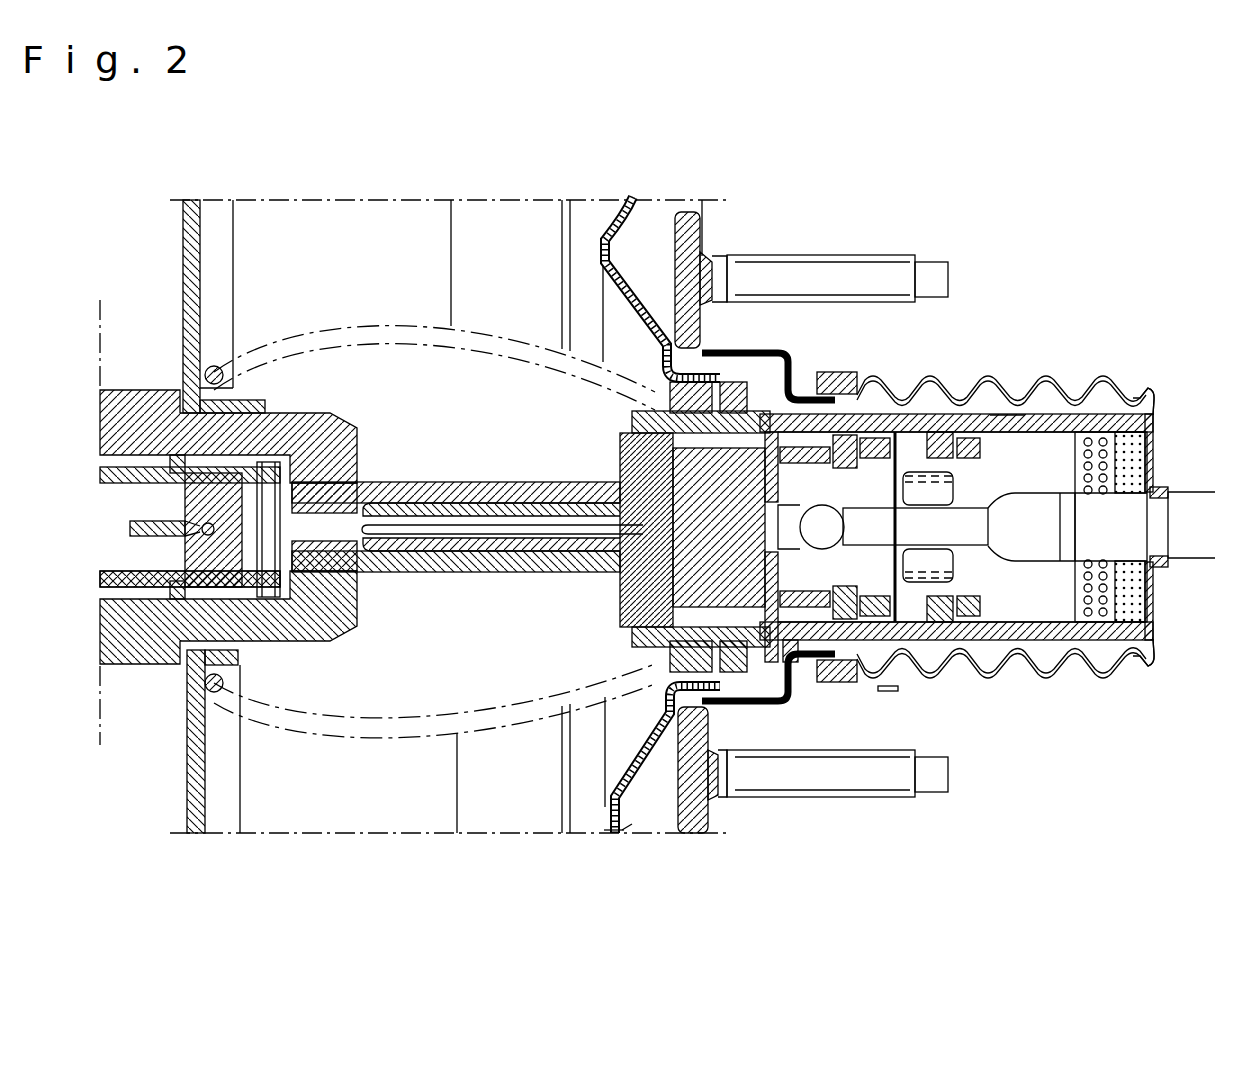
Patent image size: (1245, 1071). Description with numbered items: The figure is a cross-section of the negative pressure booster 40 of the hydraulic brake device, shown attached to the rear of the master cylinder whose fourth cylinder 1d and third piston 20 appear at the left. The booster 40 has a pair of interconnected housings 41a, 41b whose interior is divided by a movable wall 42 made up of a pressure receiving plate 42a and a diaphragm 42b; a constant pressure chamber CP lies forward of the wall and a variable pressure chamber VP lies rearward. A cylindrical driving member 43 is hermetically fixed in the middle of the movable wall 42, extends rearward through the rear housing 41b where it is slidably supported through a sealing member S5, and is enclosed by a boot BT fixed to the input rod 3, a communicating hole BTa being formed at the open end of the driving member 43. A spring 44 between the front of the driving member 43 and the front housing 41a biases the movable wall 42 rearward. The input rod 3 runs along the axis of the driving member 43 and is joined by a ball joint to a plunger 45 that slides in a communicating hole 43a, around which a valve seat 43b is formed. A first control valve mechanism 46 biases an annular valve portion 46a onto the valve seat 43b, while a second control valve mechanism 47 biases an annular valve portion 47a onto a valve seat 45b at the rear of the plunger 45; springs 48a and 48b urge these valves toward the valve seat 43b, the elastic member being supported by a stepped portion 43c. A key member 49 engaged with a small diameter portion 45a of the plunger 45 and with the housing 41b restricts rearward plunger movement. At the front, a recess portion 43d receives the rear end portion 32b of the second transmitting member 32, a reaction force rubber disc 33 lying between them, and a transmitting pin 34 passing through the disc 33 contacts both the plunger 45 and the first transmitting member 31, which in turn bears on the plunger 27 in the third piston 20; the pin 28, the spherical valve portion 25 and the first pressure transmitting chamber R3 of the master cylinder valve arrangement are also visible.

The constant pressure chamber CP is at (355, 225).
The variable pressure chamber VP is at (655, 235).
The front housing 41a is at (186, 226).
The rear housing 41b is at (703, 226).
The negative pressure booster 40 is at (998, 251).
The first pressure transmitting chamber R3 is at (144, 467).
The reaction force rubber disc 33 is at (640, 428).
The recess portion 43d is at (690, 413).
The communicating hole 43a is at (788, 415).
The valve seat 43b is at (843, 374).
The annular valve portion 46a is at (887, 390).
The stepped portion 43c is at (1043, 418).
The driving member 43 is at (1088, 418).
The valve seat 45b is at (1012, 493).
The boot BT is at (1143, 400).
The annular valve portion 47a is at (868, 432).
The pin 28 is at (283, 433).
The fourth cylinder 1d is at (358, 437).
The third piston 20 is at (416, 483).
The second transmitting member 32 is at (622, 478).
The first transmitting member 31 is at (469, 527).
The input rod 3 is at (1187, 520).
The plunger 27 is at (347, 532).
The transmitting pin 34 is at (618, 599).
The rear end portion 32b is at (612, 620).
The spherical-shaped valve portion 25 is at (152, 580).
The spring 44 is at (332, 737).
The key member 49 is at (690, 665).
The annular small diameter portion 45a is at (793, 662).
The plunger 45 is at (832, 575).
The first control valve mechanism 46 is at (885, 665).
The second control valve mechanism 47 is at (935, 600).
The spring 48a is at (1092, 600).
The spring 48b is at (1125, 625).
The communicating hole BTa is at (1150, 645).
The sealing member S5 is at (882, 692).
The pressure receiving plate 42a is at (608, 829).
The movable wall 42 is at (614, 828).
The diaphragm 42b is at (630, 826).